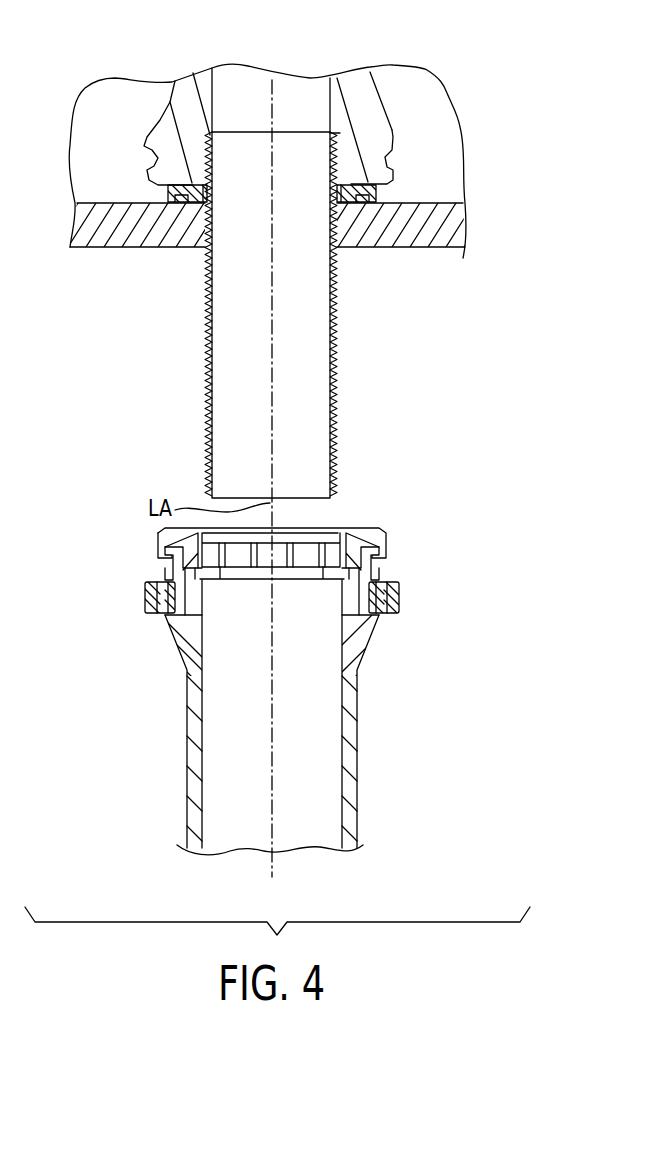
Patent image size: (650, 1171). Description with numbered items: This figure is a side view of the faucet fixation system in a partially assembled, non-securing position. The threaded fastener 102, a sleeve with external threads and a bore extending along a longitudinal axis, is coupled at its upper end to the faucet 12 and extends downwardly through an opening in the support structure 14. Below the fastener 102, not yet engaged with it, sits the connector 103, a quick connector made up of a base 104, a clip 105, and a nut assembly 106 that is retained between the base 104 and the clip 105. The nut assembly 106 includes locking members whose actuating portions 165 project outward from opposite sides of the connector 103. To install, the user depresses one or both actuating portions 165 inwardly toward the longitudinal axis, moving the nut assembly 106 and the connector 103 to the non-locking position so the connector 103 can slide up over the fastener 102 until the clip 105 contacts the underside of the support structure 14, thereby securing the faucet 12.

The faucet 12 is at (373, 78).
The support structure 14 is at (418, 235).
The fastener 102 is at (338, 406).
The connector 103 is at (302, 681).
The base 104 is at (295, 717).
The clip 105 is at (373, 533).
The nut assembly 106 is at (389, 596).
The actuating portion 165 is at (147, 600).